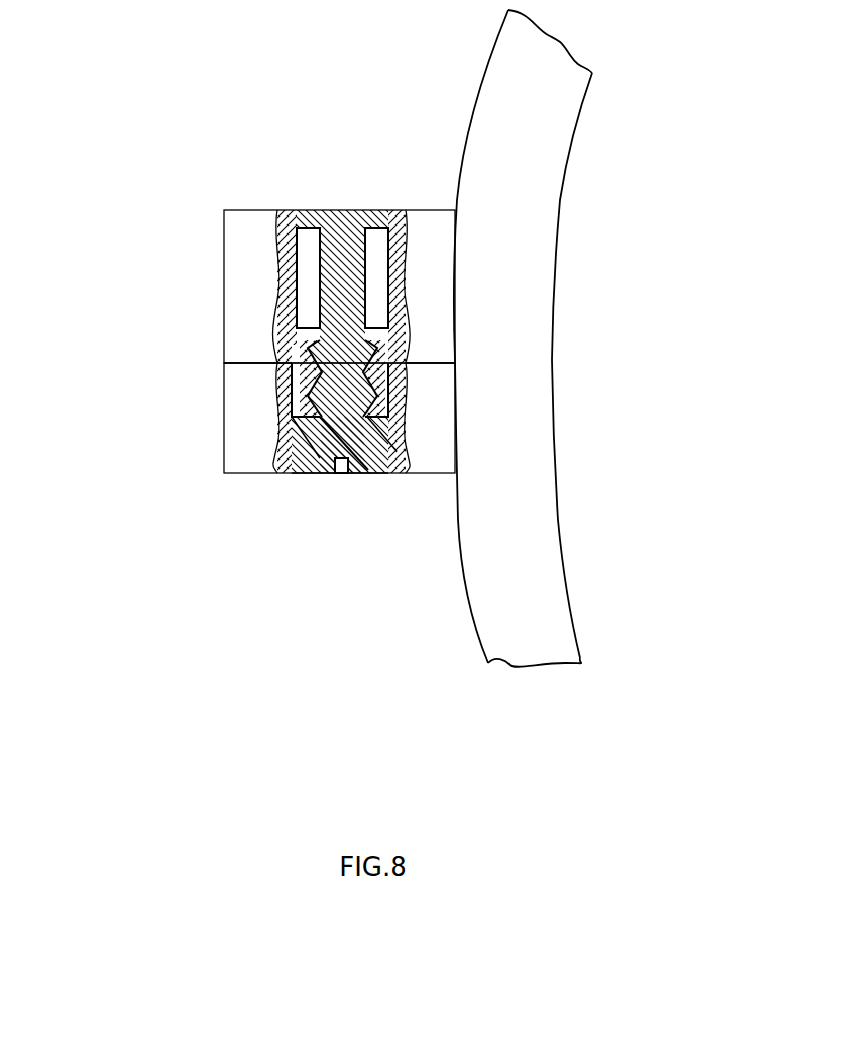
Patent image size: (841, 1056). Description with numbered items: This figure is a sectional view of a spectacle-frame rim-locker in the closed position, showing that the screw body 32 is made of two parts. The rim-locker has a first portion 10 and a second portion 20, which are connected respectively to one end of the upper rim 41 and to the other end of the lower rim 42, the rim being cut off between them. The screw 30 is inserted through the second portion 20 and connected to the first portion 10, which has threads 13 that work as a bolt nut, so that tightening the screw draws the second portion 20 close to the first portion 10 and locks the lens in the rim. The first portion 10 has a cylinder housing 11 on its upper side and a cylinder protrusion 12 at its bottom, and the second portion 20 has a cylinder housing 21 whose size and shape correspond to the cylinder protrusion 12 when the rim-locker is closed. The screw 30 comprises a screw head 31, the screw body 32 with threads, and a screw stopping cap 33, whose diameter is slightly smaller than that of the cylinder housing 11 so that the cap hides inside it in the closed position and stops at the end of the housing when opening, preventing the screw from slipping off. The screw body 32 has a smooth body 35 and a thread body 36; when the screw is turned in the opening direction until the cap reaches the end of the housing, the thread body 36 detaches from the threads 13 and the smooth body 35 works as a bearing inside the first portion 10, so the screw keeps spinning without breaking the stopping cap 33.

The first portion 10 is at (260, 228).
The cylinder housing 11 is at (298, 210).
The cylinder protrusion 12 is at (293, 368).
The threads 13 is at (300, 332).
The second portion 20 is at (248, 443).
The cylinder housing 21 is at (280, 415).
The screw 30 is at (310, 467).
The screw head 31 is at (370, 473).
The screw body 32 is at (407, 382).
The screw stopping cap 33 is at (342, 212).
The smooth body 35 is at (407, 313).
The thread body 36 is at (407, 347).
The upper rim 41 is at (538, 145).
The lower rim 42 is at (533, 588).